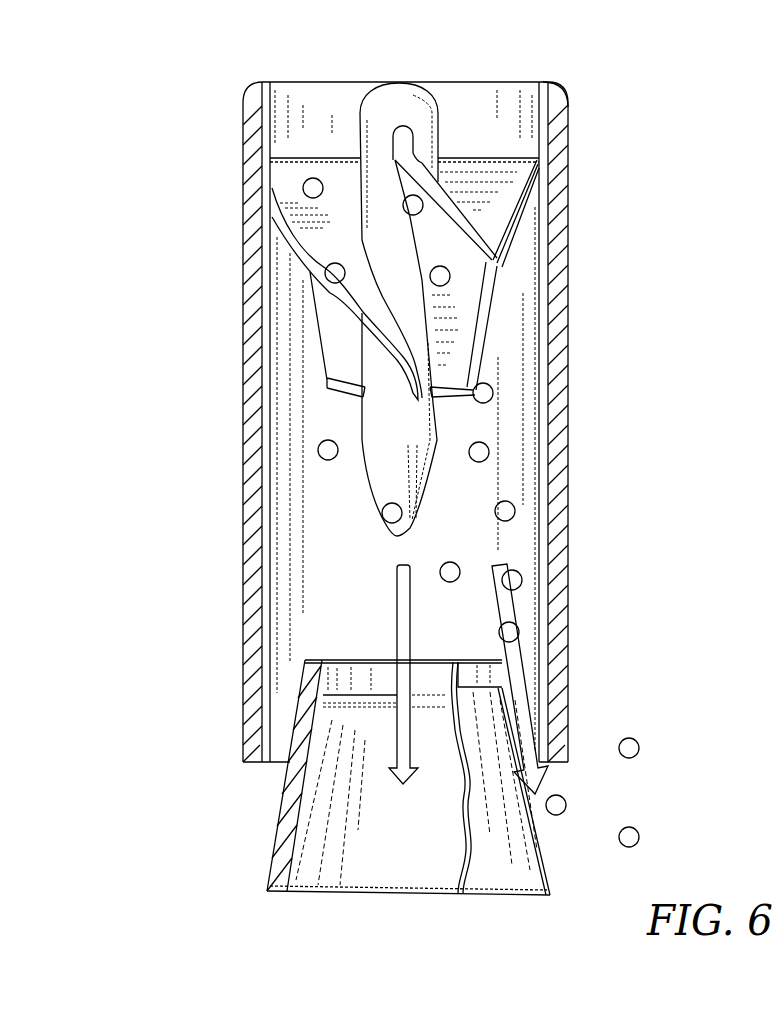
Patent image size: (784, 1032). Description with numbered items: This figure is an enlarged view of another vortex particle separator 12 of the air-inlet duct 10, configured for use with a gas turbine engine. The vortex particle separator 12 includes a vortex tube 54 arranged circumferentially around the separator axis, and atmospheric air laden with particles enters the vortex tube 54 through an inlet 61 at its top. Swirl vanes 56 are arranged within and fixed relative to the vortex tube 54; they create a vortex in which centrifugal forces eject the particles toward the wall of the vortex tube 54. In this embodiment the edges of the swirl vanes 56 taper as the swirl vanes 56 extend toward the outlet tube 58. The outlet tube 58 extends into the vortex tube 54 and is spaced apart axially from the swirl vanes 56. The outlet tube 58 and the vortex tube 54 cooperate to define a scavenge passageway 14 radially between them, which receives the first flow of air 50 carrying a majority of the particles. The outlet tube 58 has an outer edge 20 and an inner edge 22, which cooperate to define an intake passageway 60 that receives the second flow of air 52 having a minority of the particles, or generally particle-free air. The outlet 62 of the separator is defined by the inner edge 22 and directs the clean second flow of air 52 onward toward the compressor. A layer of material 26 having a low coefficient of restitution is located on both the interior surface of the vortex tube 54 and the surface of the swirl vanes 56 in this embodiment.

The air-inlet duct 10 is at (256, 77).
The vortex particle separator 12 is at (191, 494).
The scavenge passageway 14 is at (507, 689).
The outer edge 20 is at (353, 661).
The inner edge 22 is at (474, 892).
The layer of material 26 is at (510, 190).
The first flow of air 50 is at (512, 613).
The second flow of air 52 is at (393, 582).
The vortex tube 54 is at (557, 103).
The swirl vanes 56 is at (335, 343).
The outlet tube 58 is at (520, 860).
The intake passageway 60 is at (388, 813).
The inlet 61 is at (469, 112).
The outlet 62 is at (395, 878).